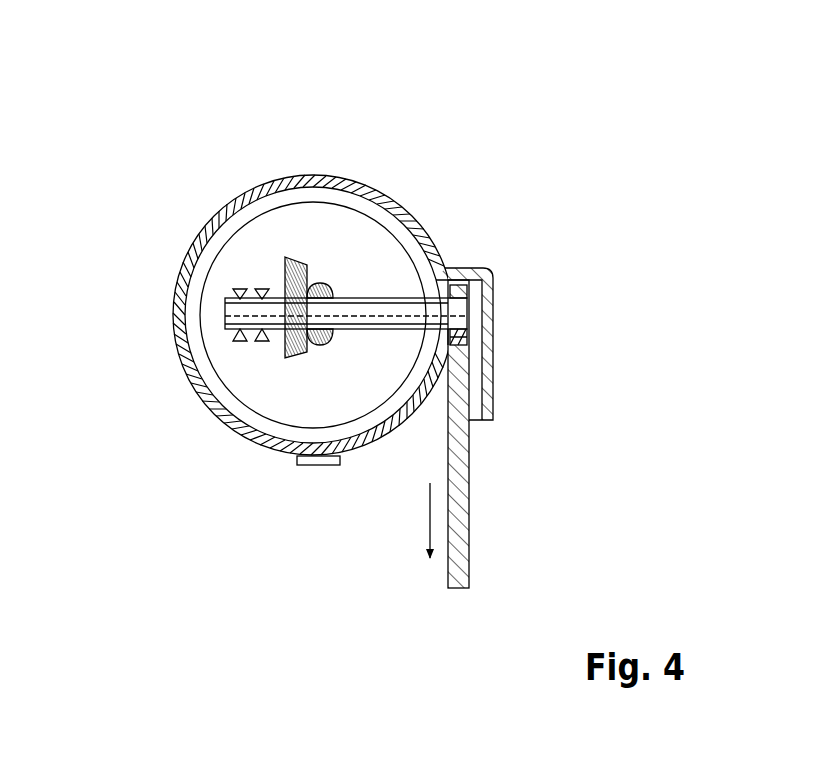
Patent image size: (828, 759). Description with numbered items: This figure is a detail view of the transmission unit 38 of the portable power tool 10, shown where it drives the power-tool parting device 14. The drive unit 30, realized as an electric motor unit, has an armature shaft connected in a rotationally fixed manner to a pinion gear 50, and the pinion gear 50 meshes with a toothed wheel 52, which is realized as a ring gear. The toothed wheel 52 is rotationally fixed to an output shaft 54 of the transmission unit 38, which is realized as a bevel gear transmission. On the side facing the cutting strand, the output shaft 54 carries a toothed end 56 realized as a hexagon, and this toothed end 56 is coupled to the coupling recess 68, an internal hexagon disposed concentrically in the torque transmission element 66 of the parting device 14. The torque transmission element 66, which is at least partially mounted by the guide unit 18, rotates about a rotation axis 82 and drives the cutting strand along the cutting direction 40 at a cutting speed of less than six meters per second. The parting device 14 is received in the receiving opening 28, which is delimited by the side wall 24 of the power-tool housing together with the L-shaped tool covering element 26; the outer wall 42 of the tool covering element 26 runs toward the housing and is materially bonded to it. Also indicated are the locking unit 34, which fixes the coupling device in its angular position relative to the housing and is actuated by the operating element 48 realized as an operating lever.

The portable power tool 10 is at (548, 142).
The power-tool parting device 14 is at (442, 608).
The guide unit 18 is at (457, 523).
The side wall 24 is at (470, 358).
The tool covering element 26 is at (475, 326).
The receiving opening 28 is at (470, 281).
The drive unit 30 is at (352, 228).
The locking unit 34 is at (300, 507).
The transmission unit 38 is at (134, 374).
The cutting direction 40 is at (430, 510).
The outer wall 42 is at (493, 389).
The operating element 48 is at (300, 466).
The pinion gear 50 is at (333, 284).
The toothed wheel 52 is at (293, 256).
The output shaft 54 is at (427, 288).
The toothed end 56 is at (483, 283).
The torque transmission element 66 is at (452, 342).
The coupling recess 68 is at (458, 333).
The rotation axis 82 is at (430, 288).